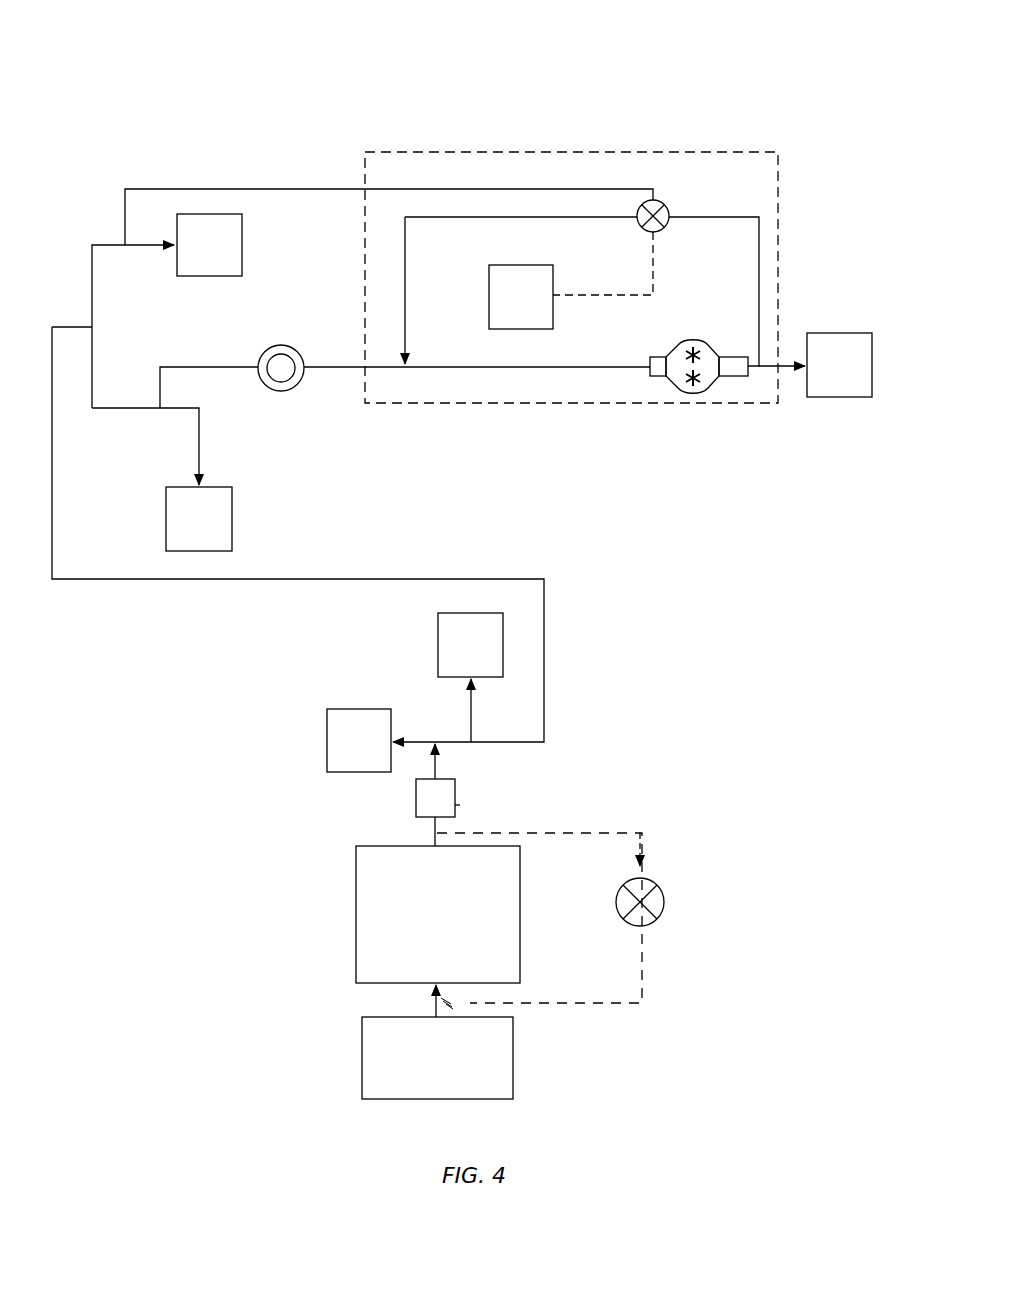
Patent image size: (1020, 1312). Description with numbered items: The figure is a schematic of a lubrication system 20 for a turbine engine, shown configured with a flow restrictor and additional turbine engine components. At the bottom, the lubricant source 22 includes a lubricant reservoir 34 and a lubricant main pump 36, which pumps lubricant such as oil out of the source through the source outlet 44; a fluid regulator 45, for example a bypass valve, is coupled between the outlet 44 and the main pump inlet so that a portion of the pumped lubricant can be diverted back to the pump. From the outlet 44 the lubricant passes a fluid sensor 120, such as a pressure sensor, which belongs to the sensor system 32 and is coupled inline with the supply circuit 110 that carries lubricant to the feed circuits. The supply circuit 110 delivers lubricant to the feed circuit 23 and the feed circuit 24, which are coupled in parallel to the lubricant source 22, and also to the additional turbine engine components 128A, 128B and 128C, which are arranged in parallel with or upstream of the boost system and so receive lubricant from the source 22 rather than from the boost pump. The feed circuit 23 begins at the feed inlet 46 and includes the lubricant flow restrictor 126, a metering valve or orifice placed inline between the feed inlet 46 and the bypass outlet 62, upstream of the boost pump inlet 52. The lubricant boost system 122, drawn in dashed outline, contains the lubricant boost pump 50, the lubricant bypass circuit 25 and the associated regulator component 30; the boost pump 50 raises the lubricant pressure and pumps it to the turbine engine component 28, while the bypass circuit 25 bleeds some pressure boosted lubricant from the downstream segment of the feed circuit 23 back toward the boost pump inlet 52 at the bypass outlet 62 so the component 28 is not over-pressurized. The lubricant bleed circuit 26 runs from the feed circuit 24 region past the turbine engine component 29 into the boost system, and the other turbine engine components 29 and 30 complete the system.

The lubrication system 20 is at (733, 101).
The lubricant source 22 is at (550, 1022).
The feed circuit 23 is at (342, 378).
The feed circuit 24 is at (106, 238).
The lubricant bypass circuit 25 is at (768, 262).
The lubricant bleed circuit 26 is at (318, 186).
The turbine engine component 28 is at (835, 400).
The turbine engine component 29 is at (220, 208).
The turbine engine component 30 is at (558, 310).
The sensor system 32 is at (405, 795).
The lubricant reservoir 34 is at (358, 1047).
The lubricant main pump 36 is at (352, 918).
The source outlet 44 is at (433, 838).
The fluid regulator 45 is at (665, 904).
The feed inlet 46 is at (157, 407).
The lubricant boost pump 50 is at (688, 401).
The boost pump inlet 52 is at (650, 376).
The bypass outlet 62 is at (407, 375).
The supply circuit 110 is at (442, 764).
The fluid sensor 120 is at (456, 805).
The lubricant boost system 122 is at (789, 177).
The lubricant flow restrictor 126 is at (281, 343).
The additional turbine engine component 128A is at (326, 742).
The additional turbine engine component 128B is at (437, 648).
The additional turbine engine component 128C is at (233, 520).